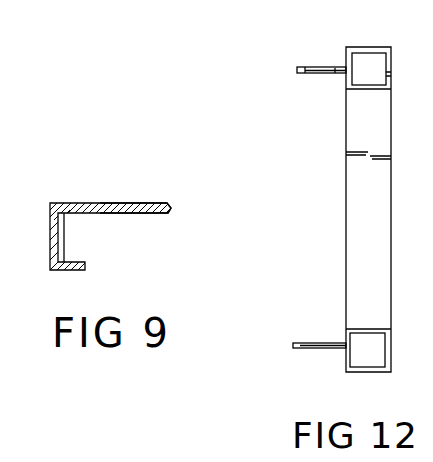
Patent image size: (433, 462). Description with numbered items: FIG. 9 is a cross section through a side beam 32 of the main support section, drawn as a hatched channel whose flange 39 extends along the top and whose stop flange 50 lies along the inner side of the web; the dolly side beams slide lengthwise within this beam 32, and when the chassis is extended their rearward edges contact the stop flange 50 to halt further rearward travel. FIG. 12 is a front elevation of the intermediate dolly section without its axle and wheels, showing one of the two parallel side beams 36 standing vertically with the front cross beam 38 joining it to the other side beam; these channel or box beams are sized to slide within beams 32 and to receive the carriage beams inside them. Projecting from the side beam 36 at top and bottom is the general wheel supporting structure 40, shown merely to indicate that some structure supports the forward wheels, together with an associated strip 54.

In FIG. 9, the side beam of main support section 32 is at (78, 203).
In FIG. 9, the flange 39 is at (149, 203).
In FIG. 9, the stop flange 50 is at (62, 249).
In FIG. 12, the side beam 36 is at (372, 47).
In FIG. 12, the front cross beam 38 is at (347, 247).
In FIG. 12, the wheel supporting structure 40 is at (302, 67).
In FIG. 12, the strip 54 is at (320, 74).